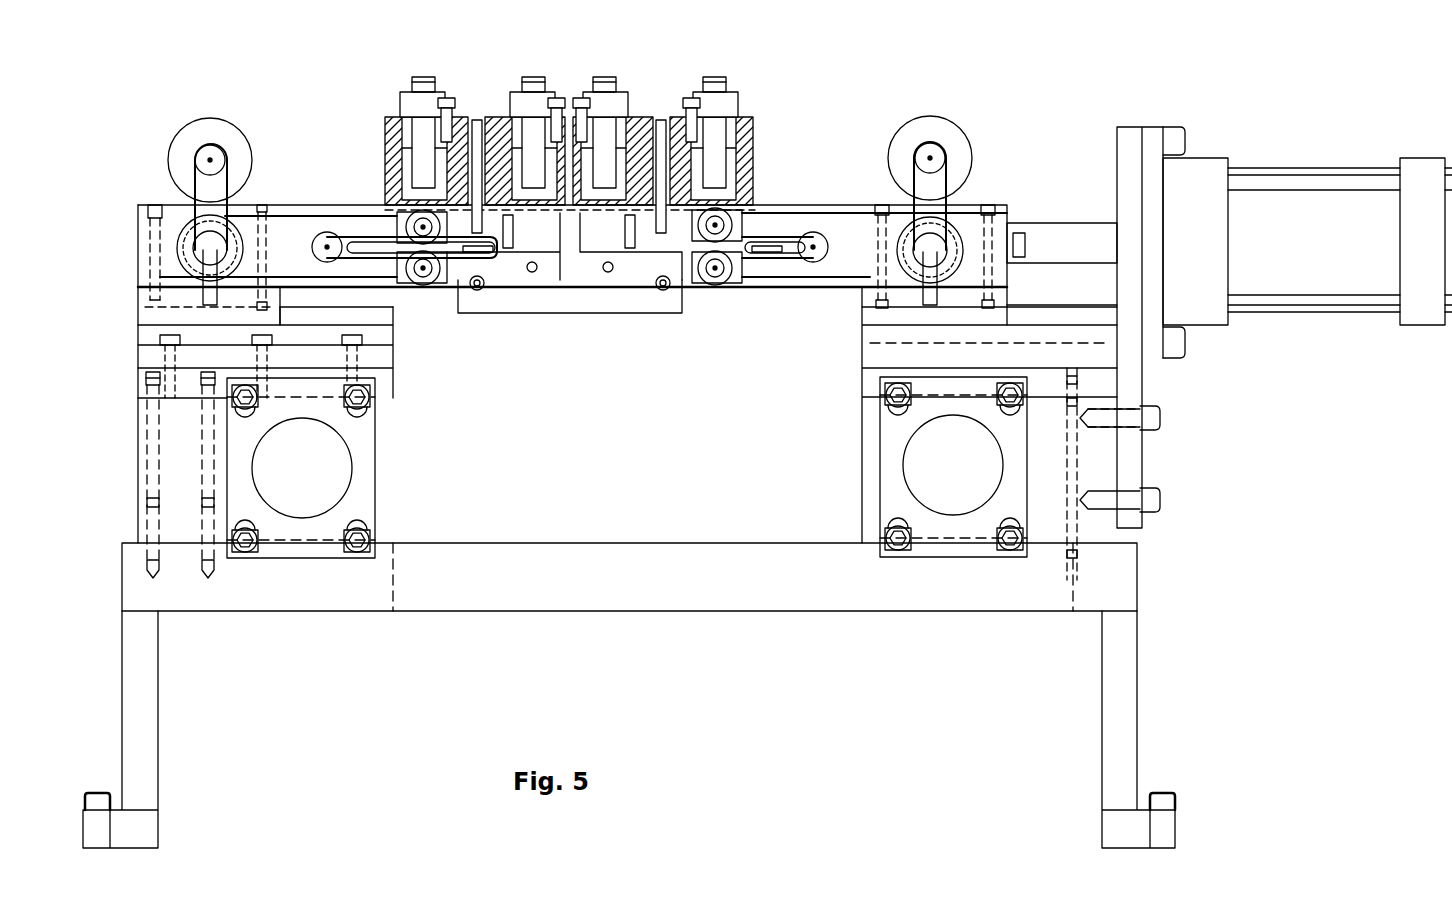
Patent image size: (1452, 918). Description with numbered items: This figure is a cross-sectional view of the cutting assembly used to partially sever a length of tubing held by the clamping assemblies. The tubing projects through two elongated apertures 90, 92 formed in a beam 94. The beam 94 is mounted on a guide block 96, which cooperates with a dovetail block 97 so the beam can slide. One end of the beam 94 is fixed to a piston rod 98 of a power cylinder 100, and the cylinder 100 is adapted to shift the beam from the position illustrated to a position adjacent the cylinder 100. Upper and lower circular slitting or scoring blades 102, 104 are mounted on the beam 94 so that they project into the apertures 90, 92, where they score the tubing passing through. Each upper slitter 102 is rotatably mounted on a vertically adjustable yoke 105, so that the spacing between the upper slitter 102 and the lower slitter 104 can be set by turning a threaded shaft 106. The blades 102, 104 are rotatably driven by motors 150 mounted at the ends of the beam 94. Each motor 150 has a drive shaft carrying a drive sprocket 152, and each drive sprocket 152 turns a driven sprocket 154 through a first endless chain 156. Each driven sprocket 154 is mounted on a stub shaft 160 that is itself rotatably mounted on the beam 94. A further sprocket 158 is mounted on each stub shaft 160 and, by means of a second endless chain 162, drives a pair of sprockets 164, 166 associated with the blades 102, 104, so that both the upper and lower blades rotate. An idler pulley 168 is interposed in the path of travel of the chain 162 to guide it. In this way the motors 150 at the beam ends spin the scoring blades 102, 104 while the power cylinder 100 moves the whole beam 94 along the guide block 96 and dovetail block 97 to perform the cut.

The elongated aperture 90 is at (362, 237).
The elongated aperture 92 is at (770, 237).
The beam 94 is at (310, 204).
The guide block 96 is at (138, 298).
The dovetail block 97 is at (331, 313).
The piston rod 98 is at (1062, 223).
The power cylinder 100 is at (1180, 198).
The upper circular slitting blade 102 is at (405, 222).
The lower circular slitting blade 104 is at (413, 280).
The vertically adjustable yoke 105 is at (423, 170).
The threaded shaft 106 is at (385, 225).
The motor 150 is at (177, 137).
The drive sprocket 152 is at (210, 145).
The driven sprocket 154 is at (208, 250).
The first endless chain 156 is at (193, 185).
The sprocket 158 is at (195, 268).
The stub shaft 160 is at (283, 280).
The second endless chain 162 is at (310, 213).
The sprocket 164 is at (562, 270).
The sprocket 166 is at (447, 283).
The idler pulley 168 is at (340, 317).